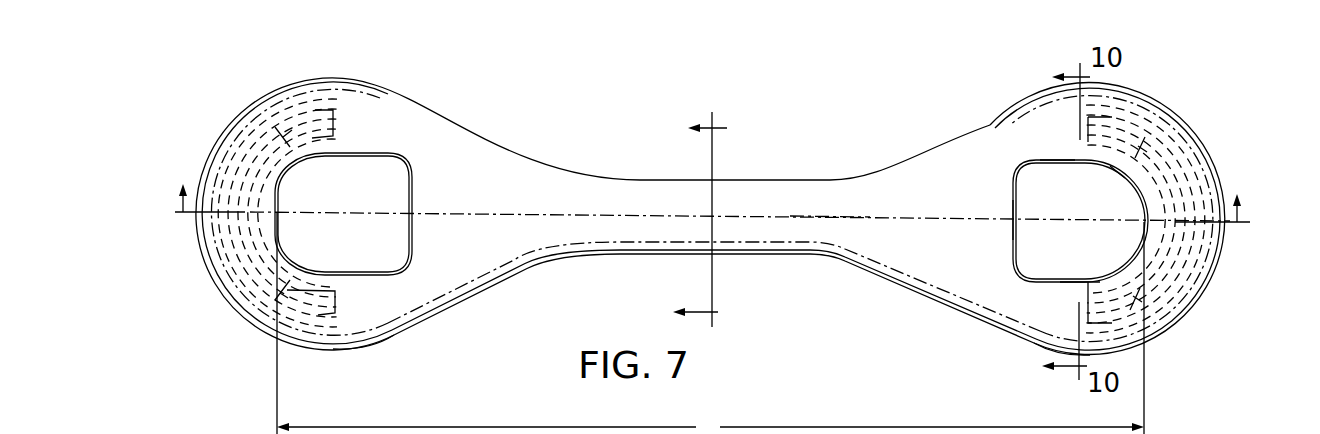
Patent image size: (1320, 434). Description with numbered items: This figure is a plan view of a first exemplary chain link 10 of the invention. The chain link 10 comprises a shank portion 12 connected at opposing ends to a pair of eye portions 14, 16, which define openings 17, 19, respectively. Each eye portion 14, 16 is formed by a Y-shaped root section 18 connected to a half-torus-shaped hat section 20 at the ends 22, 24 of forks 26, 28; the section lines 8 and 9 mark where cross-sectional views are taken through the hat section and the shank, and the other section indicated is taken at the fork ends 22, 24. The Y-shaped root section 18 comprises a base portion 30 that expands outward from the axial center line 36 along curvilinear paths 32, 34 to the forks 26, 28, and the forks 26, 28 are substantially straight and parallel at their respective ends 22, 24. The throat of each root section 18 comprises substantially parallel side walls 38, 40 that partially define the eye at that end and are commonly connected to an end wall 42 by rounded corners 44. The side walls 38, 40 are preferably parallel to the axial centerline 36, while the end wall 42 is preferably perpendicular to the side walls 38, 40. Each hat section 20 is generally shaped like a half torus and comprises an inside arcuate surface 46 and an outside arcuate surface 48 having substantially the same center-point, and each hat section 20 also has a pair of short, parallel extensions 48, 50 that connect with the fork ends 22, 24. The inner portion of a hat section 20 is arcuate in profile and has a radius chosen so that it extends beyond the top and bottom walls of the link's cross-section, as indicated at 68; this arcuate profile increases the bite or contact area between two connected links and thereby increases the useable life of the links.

The section line 8- 8 is at (710, 221).
The section line 9- 9 is at (707, 221).
The chain link 10 is at (588, 280).
The shank portion 12 is at (760, 223).
The eye portion 14 is at (330, 312).
The eye portion 16 is at (1150, 305).
The opening 17 is at (350, 193).
The Y-shaped root section 18 is at (430, 302).
The opening 19 is at (1143, 222).
The hat section 20 is at (240, 260).
The fork end 22 is at (985, 128).
The fork end 24 is at (1082, 328).
The fork 26 is at (1008, 128).
The fork 28 is at (1048, 317).
The base portion 30 is at (823, 204).
The curvilinear path 32 is at (863, 172).
The curvilinear path 34 is at (883, 270).
The axial center line 36 is at (827, 217).
The side wall 38 is at (1058, 163).
The side wall 40 is at (1058, 281).
The end wall 42 is at (1017, 218).
The rounded corner 44 is at (1020, 170).
The inside arcuate surface 46 is at (1122, 176).
The outside arcuate surface 48 is at (1163, 118).
The extension 50 is at (1090, 323).
The arcuate profile extension 68 is at (734, 323).